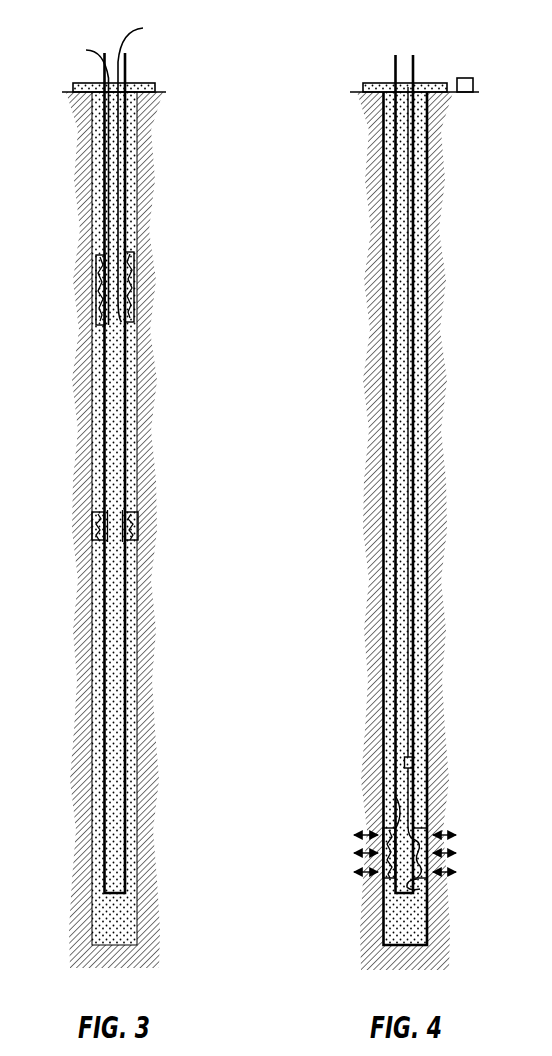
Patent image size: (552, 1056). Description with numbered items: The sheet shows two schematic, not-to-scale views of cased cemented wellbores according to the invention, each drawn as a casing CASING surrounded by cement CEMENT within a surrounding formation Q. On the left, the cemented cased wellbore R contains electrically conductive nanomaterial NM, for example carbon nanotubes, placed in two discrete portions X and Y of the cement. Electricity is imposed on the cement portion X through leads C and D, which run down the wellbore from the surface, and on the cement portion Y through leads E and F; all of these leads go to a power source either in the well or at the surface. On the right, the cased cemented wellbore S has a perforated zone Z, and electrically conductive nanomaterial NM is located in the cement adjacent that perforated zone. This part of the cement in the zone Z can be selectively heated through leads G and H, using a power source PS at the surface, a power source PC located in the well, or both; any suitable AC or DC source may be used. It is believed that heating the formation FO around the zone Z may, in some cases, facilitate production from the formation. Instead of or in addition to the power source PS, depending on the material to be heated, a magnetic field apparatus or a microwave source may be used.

In FIG. 3, the formation Q is at (105, 530).
In FIG. 3, the cement CEMENT is at (131, 683).
In FIG. 4, the cement CEMENT is at (383, 214).
In FIG. 3, the casing CASING is at (118, 731).
In FIG. 4, the casing CASING is at (400, 175).
In FIG. 3, the lead C is at (88, 180).
In FIG. 3, the lead D is at (140, 168).
In FIG. 3, the electrically conductive nanomaterial NM is at (98, 267).
In FIG. 4, the electrically conductive nanomaterial NM is at (385, 830).
In FIG. 3, the cement portion X is at (152, 250).
In FIG. 3, the cement portion Y is at (152, 511).
In FIG. 3, the cemented cased wellbore R is at (138, 408).
In FIG. 3, the lead E is at (98, 515).
In FIG. 3, the lead F is at (137, 541).
In FIG. 4, the cased cemented wellbore S is at (383, 138).
In FIG. 4, the power source at the surface PS is at (470, 93).
In FIG. 4, the power source in the well PC is at (414, 761).
In FIG. 4, the lead G is at (397, 797).
In FIG. 4, the formation FO is at (334, 864).
In FIG. 4, the perforated zone Z is at (465, 833).
In FIG. 4, the lead H is at (420, 889).